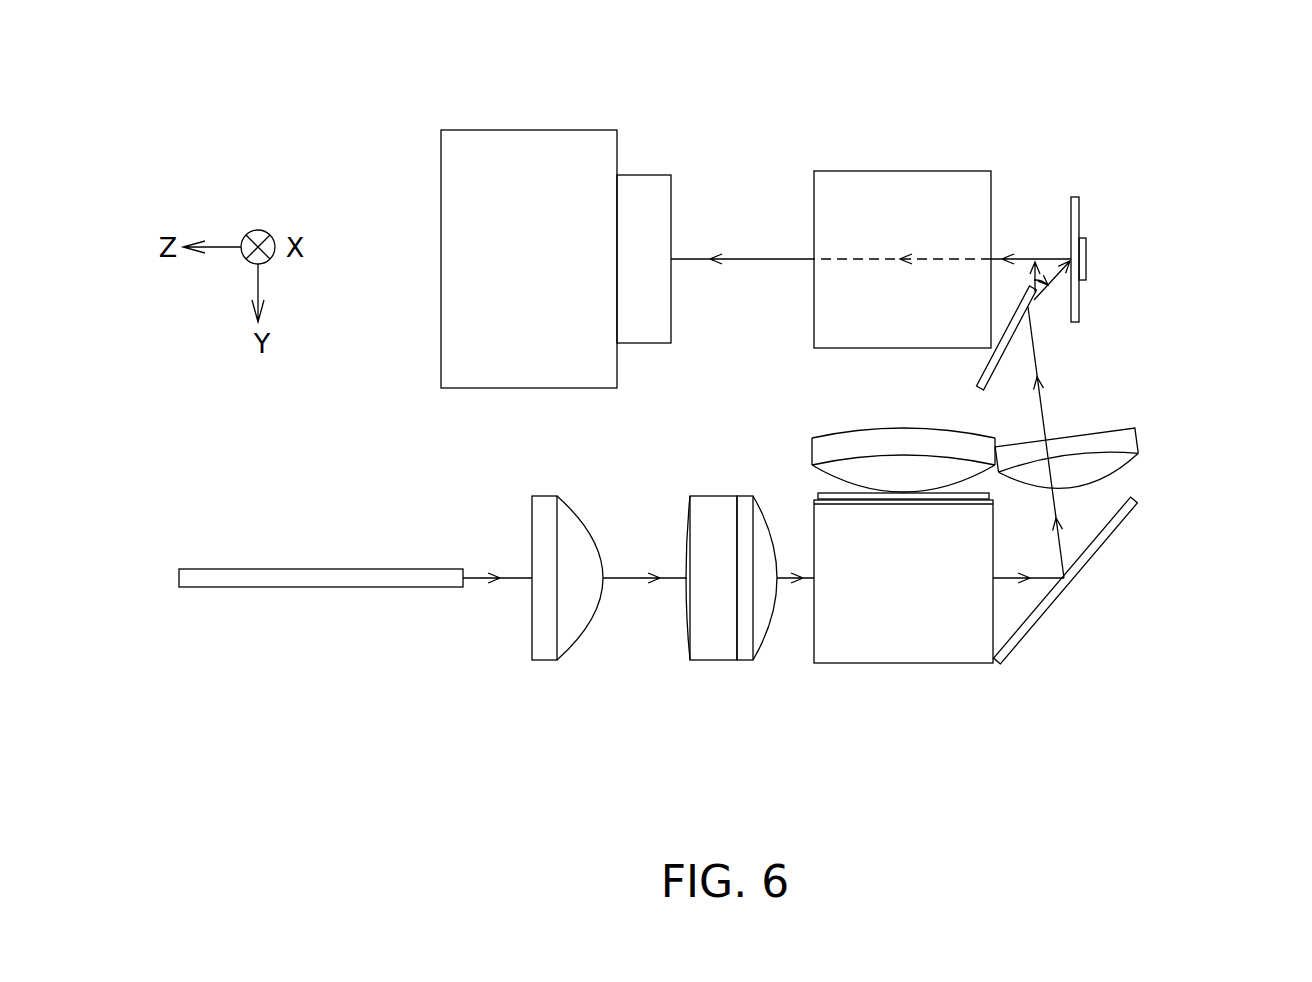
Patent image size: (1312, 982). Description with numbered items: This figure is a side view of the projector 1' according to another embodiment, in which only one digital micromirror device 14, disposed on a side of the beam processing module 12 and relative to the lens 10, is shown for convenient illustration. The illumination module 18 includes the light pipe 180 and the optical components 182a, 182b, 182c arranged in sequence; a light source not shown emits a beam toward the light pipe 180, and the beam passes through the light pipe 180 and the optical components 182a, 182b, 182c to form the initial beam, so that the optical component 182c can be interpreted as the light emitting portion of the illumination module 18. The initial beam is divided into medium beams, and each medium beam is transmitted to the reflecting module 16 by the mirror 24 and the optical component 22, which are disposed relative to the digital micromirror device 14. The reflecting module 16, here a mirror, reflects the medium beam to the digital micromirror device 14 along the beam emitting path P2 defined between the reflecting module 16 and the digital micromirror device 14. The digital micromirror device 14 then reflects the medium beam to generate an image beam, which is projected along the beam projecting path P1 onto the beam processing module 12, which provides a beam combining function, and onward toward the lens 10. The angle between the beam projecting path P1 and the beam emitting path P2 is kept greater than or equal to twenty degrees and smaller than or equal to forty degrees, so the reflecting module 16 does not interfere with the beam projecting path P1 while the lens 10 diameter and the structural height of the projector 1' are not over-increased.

The projector 1' is at (1180, 50).
The lens 10 is at (472, 130).
The beam processing module 12 is at (962, 171).
The digital micromirror device 14 is at (1080, 220).
The reflecting module 16 is at (978, 375).
The illumination module 18 is at (621, 584).
The optical component 22 is at (1140, 434).
The mirror 24 is at (1122, 518).
The light pipe 180 is at (367, 569).
The optical component 182a is at (545, 496).
The optical component 182b is at (713, 660).
The optical component 182c is at (743, 660).
The beam projecting path P1 is at (743, 259).
The beam emitting path P2 is at (1036, 301).